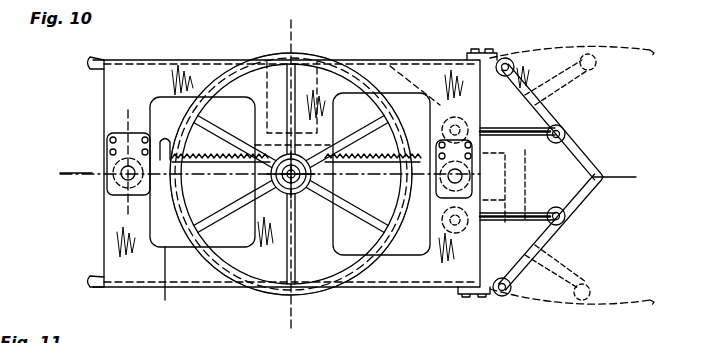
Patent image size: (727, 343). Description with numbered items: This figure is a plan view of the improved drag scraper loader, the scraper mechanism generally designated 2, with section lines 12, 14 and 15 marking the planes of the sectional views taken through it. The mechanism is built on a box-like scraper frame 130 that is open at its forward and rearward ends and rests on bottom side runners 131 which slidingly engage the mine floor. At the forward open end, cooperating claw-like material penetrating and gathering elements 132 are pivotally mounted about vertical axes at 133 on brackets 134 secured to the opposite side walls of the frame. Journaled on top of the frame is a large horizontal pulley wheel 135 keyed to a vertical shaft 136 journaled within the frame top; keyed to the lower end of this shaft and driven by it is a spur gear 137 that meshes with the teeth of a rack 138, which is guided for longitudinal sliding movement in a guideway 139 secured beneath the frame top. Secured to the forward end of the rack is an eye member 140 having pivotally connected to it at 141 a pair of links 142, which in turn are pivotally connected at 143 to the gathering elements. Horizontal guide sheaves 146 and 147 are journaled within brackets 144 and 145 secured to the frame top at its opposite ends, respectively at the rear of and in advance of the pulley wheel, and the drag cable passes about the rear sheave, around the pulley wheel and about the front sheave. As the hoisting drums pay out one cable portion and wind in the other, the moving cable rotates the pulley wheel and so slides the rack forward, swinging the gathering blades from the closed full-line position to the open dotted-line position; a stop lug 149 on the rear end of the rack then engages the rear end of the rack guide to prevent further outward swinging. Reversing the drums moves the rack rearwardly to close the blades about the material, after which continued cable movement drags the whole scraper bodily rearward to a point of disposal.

The scraper mechanism 2 is at (432, 58).
The section line 12- 12 is at (55, 171).
The section line 14- 14 is at (120, 114).
The section line 15- 15 is at (301, 29).
The scraper frame 130 is at (242, 291).
The bottom side runners 131 is at (93, 60).
The gathering elements 132 is at (537, 63).
The pivotal mounting 133 is at (509, 59).
The brackets 134 is at (487, 53).
The pulley wheel 135 is at (237, 58).
The vertical shaft 136 is at (291, 174).
The spur gear 137 is at (318, 182).
The rack 138 is at (192, 158).
The guideway 139 is at (267, 62).
The eye member 140 is at (425, 226).
The pivotal connections 141 is at (365, 62).
The links 142 is at (492, 124).
The pivotal connection 143 is at (562, 127).
The bracket 144 is at (108, 192).
The bracket 145 is at (487, 167).
The rear guide sheave 146 is at (110, 179).
The front guide sheave 147 is at (503, 181).
The stop lug 149 is at (165, 247).